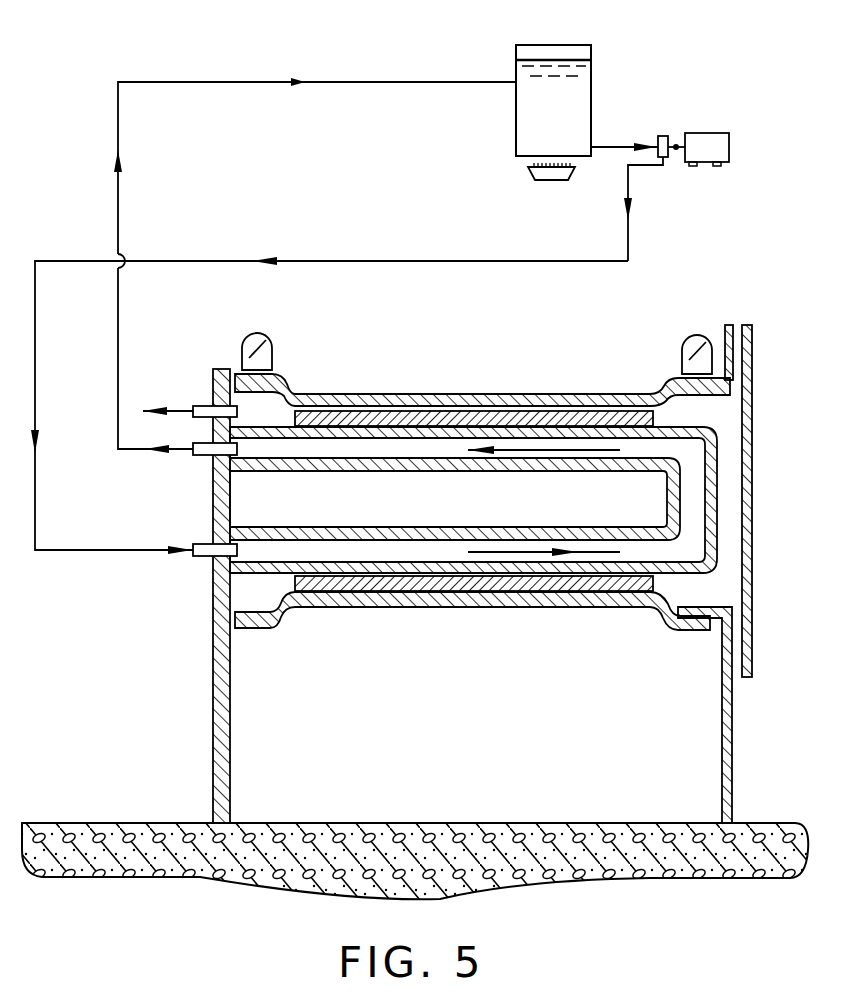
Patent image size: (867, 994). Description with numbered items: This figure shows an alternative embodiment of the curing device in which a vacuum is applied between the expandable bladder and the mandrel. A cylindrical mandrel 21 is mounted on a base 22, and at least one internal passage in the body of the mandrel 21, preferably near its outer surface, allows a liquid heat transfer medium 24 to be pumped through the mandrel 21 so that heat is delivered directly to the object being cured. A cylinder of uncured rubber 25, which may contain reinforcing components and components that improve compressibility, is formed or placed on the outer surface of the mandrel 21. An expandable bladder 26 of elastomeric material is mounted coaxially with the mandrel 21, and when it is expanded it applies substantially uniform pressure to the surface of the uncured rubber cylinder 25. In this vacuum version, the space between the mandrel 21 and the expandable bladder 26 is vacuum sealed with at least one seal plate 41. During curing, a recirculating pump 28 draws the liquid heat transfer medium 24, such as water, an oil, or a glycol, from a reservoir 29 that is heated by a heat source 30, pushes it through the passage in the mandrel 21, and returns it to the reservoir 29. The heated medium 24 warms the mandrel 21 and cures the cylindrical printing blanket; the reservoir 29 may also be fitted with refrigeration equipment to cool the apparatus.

The mandrel 21 is at (726, 487).
The base 22 is at (205, 712).
The liquid heat transfer medium 24 is at (544, 60).
The cylinder of uncured rubber 25 is at (665, 410).
The expandable bladder 26 is at (452, 391).
The recirculating pump 28 is at (714, 132).
The reservoir 29 is at (591, 100).
The heat source 30 is at (541, 180).
The seal plate 41 is at (758, 668).